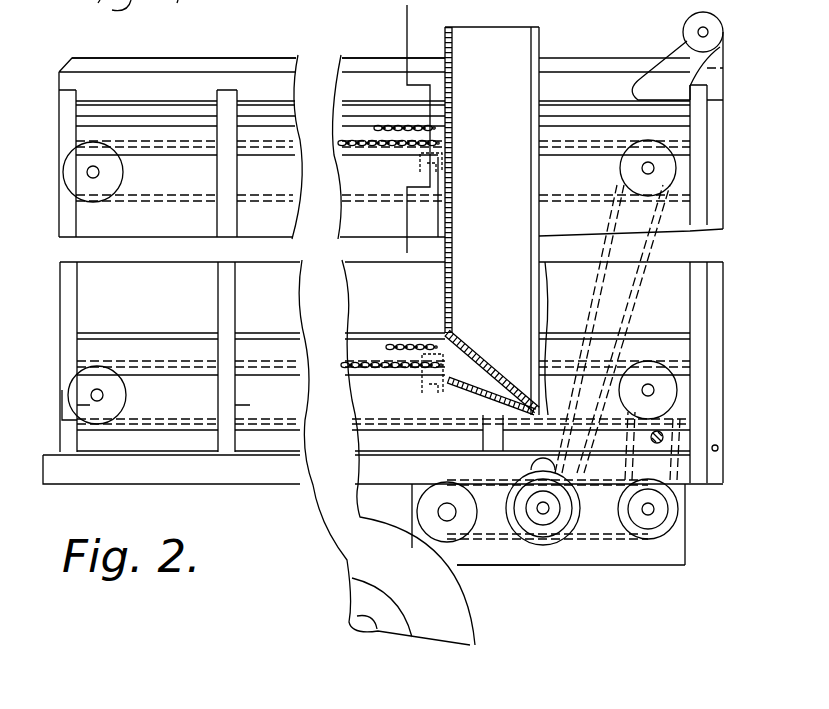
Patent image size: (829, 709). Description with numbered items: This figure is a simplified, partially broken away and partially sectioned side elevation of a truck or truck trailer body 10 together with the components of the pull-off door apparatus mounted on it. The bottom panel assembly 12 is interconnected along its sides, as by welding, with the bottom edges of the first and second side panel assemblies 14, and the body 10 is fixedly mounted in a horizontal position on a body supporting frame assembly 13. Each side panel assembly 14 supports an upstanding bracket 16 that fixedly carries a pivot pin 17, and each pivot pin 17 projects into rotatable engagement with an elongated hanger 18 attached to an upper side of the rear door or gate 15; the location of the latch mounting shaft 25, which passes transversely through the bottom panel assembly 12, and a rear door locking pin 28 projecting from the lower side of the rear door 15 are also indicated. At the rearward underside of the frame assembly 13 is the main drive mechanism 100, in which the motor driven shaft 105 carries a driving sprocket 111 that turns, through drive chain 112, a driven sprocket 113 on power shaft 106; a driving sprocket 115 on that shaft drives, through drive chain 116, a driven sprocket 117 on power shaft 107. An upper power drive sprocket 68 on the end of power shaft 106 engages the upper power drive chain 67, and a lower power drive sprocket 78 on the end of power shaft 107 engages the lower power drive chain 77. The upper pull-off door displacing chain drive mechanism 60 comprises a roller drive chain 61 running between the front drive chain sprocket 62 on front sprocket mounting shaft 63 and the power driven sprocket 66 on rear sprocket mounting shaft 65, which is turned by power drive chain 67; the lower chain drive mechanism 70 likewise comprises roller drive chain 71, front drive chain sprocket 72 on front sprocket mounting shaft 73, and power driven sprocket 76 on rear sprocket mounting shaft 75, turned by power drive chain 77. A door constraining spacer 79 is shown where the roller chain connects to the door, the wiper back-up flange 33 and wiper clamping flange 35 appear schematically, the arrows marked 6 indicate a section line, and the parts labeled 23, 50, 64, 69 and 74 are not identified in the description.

The section line 6- 6 is at (409, 12).
The truck or truck trailer body 10 is at (268, 55).
The bottom panel assembly 12 is at (58, 445).
The body supporting frame assembly 13 is at (85, 488).
The side panel assembly 14 is at (100, 240).
The rear door or gate 15 is at (715, 210).
The upstanding bracket 16 is at (680, 52).
The pivot pin 17 is at (722, 21).
The elongated hanger 18 is at (716, 87).
The chute 23 is at (491, 353).
The latch mounting shaft 25 is at (662, 437).
The rear door locking pin 28 is at (720, 448).
The wiper back-up flange 33 is at (484, 432).
The wiper clamping flange 35 is at (483, 437).
The chain 50 is at (377, 127).
The upper pull-off door displacing chain drive mechanism 60 is at (266, 138).
The roller drive chain 61 is at (393, 201).
The front drive chain sprocket 62 is at (67, 191).
The front sprocket mounting shaft 63 is at (88, 169).
The rail 64 is at (667, 140).
The rear sprocket mounting shaft 65 is at (654, 171).
The power driven sprocket 66 is at (677, 163).
The upper power drive chain 67 is at (640, 305).
The upper power drive sprocket 68 is at (547, 568).
The chain run 69 is at (410, 125).
The lower pull-off door displacing chain drive mechanism 70 is at (369, 359).
The roller drive chain 71 is at (393, 412).
The front drive chain sprocket 72 is at (80, 382).
The front sprocket mounting shaft 73 is at (93, 398).
The rail 74 is at (670, 360).
The rear sprocket mounting shaft 75 is at (653, 393).
The power driven sprocket 76 is at (678, 390).
The lower power drive chain 77 is at (680, 470).
The lower power drive sprocket 78 is at (665, 503).
The door constraining spacer 79 is at (418, 343).
The main drive mechanism 100 is at (547, 520).
The motor driven shaft 105 is at (440, 517).
The power shaft 106 is at (552, 515).
The power shaft 107 is at (651, 515).
The driving sprocket 111 is at (452, 546).
The drive chain 112 is at (470, 479).
The driven sprocket 113 is at (514, 515).
The driving sprocket 115 is at (540, 520).
The drive chain 116 is at (613, 541).
The driven sprocket 117 is at (676, 503).